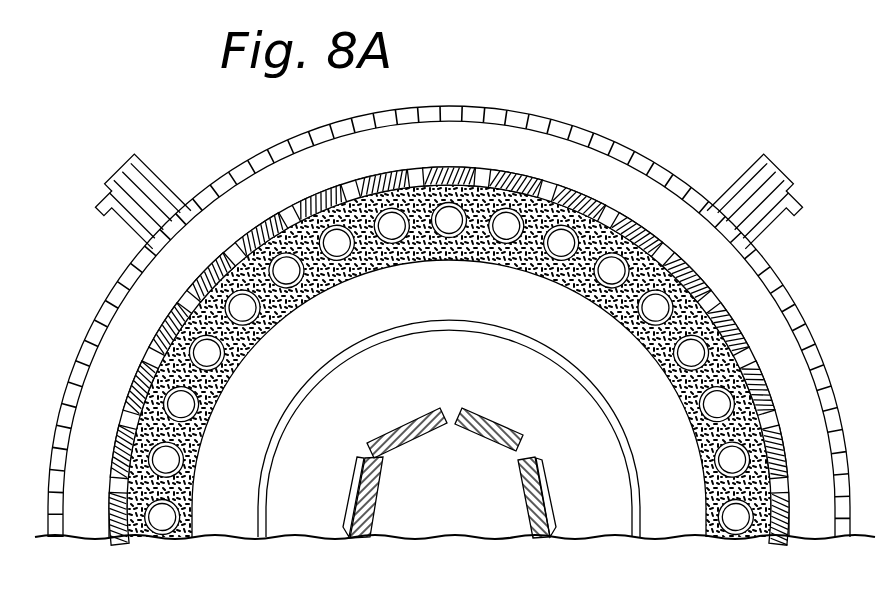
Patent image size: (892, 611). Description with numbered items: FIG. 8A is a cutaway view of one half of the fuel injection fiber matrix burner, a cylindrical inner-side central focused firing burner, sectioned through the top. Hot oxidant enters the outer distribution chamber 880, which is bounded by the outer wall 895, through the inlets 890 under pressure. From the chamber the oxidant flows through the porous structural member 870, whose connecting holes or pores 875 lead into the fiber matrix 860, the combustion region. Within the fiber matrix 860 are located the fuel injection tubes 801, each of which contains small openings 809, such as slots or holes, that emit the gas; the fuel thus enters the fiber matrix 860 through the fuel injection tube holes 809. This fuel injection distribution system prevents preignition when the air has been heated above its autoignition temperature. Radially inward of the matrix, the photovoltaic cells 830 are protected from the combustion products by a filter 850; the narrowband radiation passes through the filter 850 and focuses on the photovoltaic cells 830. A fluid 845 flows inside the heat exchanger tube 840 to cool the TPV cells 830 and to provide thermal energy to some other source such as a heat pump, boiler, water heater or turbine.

The fuel injection tube 801 is at (512, 203).
The fuel injection tube holes 809 is at (707, 473).
The photovoltaic cells 830 is at (398, 416).
The heat exchanger tube 840 is at (452, 408).
The fluid 845 is at (473, 496).
The filter 850 is at (468, 320).
The fiber matrix 860 is at (240, 338).
The porous structural member 870 is at (257, 226).
The holes or pores 875 is at (132, 418).
The outer distribution chamber 880 is at (137, 252).
The inlets 890 is at (170, 175).
The outer wall 895 is at (742, 150).